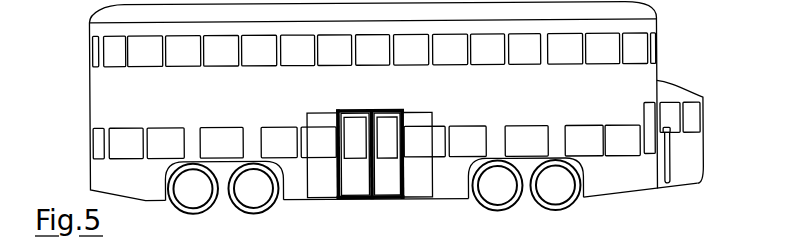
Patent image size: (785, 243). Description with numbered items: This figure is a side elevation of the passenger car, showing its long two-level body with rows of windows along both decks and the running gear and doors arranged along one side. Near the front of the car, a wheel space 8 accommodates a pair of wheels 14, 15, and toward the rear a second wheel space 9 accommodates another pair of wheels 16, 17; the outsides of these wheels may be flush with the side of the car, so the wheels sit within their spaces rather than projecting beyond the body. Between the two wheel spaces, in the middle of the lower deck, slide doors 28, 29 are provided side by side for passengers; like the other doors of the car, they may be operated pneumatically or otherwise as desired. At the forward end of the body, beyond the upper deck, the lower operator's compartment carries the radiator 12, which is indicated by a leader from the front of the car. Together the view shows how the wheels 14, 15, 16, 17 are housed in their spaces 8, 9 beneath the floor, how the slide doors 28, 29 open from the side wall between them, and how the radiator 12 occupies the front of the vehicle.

The wheel space 8 is at (224, 180).
The wheel space 9 is at (525, 178).
The radiator 12 is at (669, 165).
The wheel 14 is at (193, 189).
The wheel 15 is at (253, 188).
The wheel 16 is at (497, 185).
The wheel 17 is at (555, 185).
The slide door 28 is at (354, 154).
The slide door 29 is at (386, 154).